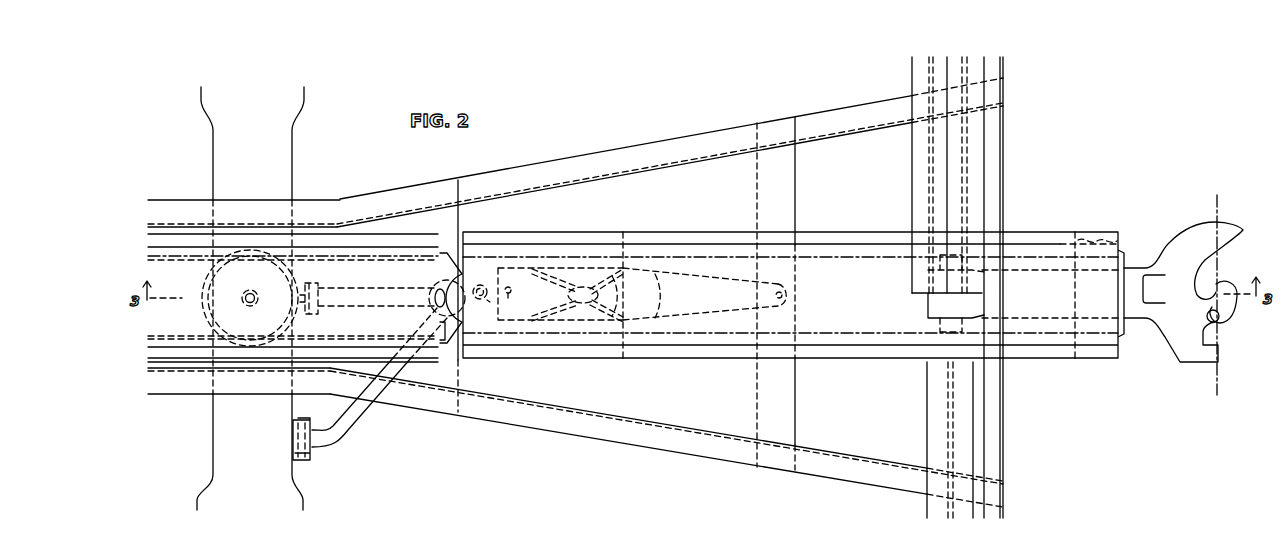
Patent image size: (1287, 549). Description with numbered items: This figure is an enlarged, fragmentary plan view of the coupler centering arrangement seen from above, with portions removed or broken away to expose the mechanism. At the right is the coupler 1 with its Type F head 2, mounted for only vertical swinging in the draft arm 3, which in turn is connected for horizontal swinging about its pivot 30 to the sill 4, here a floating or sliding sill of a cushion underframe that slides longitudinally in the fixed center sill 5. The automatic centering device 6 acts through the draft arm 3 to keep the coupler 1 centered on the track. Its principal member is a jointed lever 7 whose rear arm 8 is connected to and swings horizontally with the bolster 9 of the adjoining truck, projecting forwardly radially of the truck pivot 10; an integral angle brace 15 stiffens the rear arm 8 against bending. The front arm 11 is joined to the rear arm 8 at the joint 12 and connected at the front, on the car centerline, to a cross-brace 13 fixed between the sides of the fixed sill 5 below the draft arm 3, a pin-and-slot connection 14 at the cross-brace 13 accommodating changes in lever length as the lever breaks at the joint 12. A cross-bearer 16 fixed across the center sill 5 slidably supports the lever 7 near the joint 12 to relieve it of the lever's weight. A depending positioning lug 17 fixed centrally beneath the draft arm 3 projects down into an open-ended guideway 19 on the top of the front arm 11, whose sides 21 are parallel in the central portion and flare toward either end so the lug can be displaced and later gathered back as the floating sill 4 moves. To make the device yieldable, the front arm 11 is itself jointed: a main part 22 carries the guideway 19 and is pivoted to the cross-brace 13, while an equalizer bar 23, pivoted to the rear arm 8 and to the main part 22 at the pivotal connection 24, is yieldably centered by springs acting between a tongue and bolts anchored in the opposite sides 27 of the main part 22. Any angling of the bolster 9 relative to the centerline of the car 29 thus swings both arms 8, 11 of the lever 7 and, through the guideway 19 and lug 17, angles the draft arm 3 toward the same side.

The coupler 1 is at (1040, 266).
The head 2 is at (1230, 226).
The draft arm 3 is at (817, 232).
The sill 4 is at (178, 233).
The fixed center sill 5 is at (717, 131).
The automatic centering device 6 is at (624, 274).
The jointed lever 7 is at (483, 280).
The rear arm 8 is at (343, 288).
The bolster 9 is at (293, 151).
The pivot 10 is at (250, 291).
The front arm 11 is at (690, 276).
The joint 12 is at (476, 314).
The cross-brace 13 is at (796, 400).
The pin-and-slot connection 14 is at (771, 296).
The angle brace 15 is at (360, 411).
The cross-bearer 16 is at (462, 372).
The positioning lug 17 is at (569, 303).
The guideway 19 is at (566, 274).
The sides 21 is at (595, 296).
The main part 22 is at (735, 280).
The equalizer bar 23 is at (504, 316).
The pivotal connection 24 is at (514, 283).
The sides 27 is at (658, 296).
The car 29 is at (1005, 60).
The pivot 30 is at (438, 296).